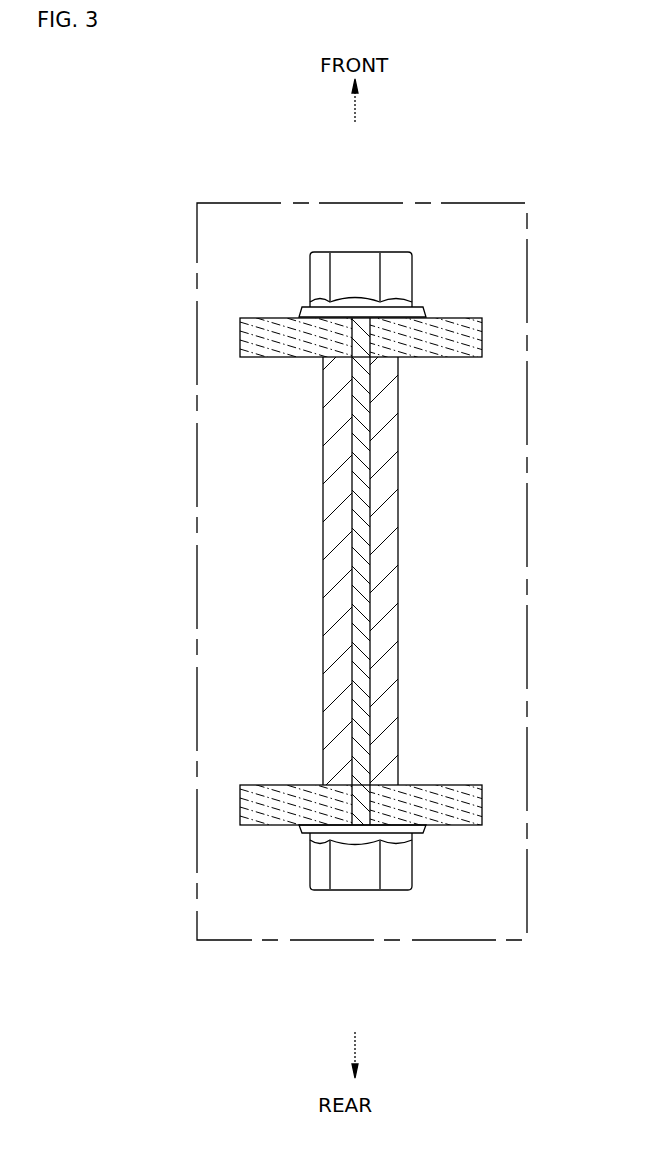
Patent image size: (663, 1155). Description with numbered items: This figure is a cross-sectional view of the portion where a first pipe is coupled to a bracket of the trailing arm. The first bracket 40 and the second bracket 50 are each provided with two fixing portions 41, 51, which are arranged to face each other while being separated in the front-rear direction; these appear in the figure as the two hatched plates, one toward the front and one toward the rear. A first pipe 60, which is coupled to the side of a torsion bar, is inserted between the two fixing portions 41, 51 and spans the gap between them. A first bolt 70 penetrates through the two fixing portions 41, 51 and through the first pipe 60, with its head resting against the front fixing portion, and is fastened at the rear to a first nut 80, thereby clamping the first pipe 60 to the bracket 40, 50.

The first bracket 40 is at (277, 578).
The second bracket 50 is at (277, 578).
The fixing portion 41 is at (277, 578).
The fixing portion 51 is at (240, 326).
The first pipe 60 is at (337, 455).
The first bolt 70 is at (360, 262).
The first nut 80 is at (347, 867).